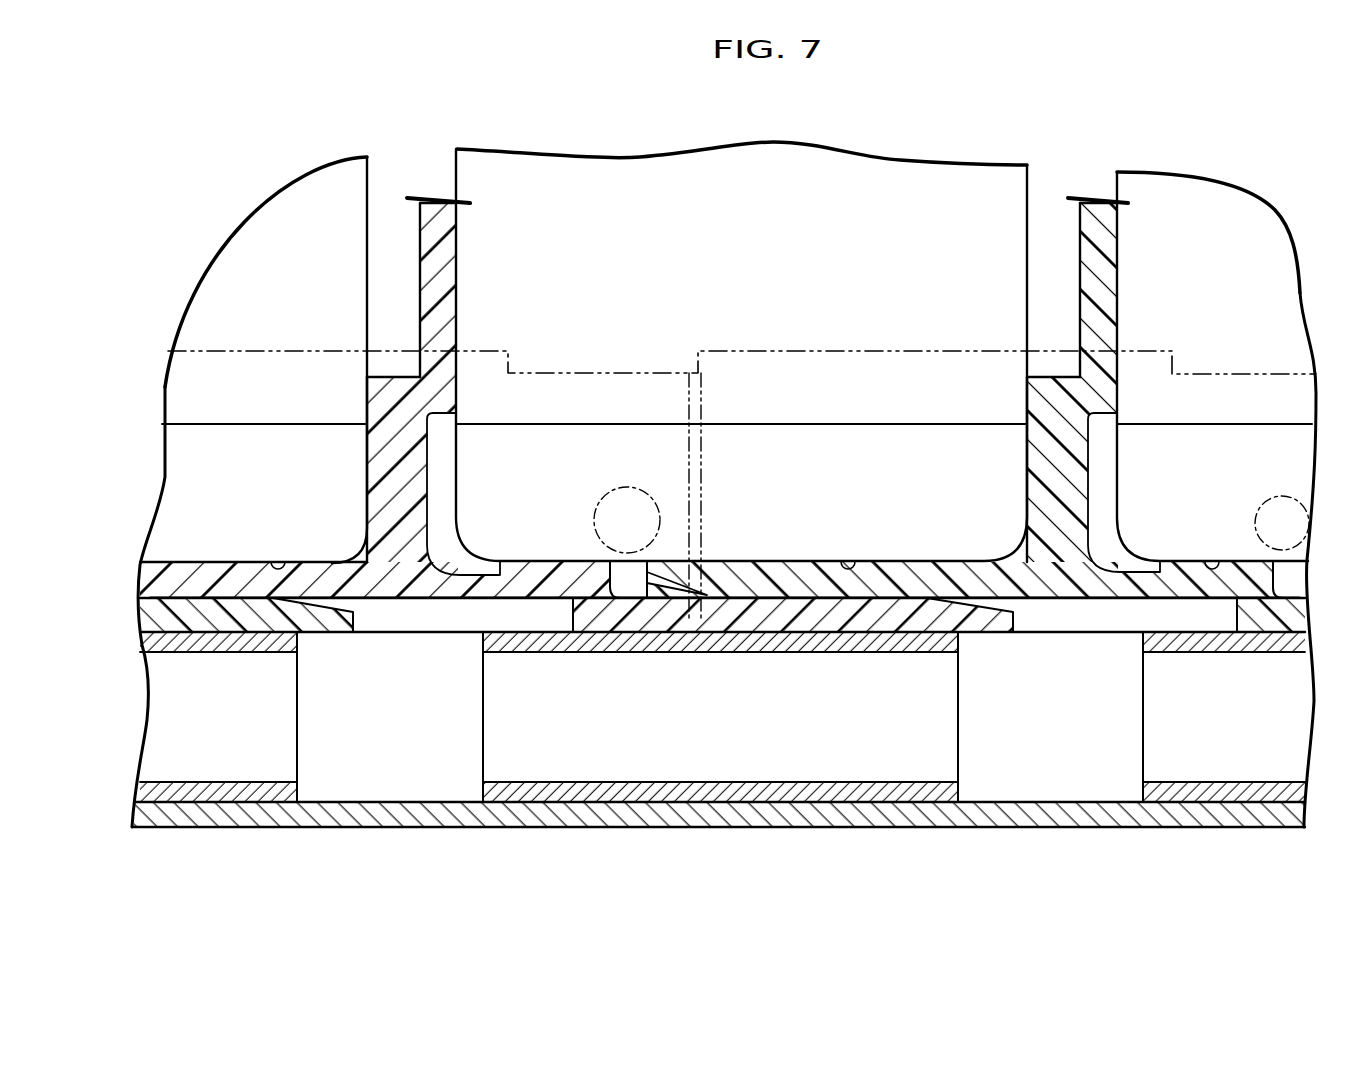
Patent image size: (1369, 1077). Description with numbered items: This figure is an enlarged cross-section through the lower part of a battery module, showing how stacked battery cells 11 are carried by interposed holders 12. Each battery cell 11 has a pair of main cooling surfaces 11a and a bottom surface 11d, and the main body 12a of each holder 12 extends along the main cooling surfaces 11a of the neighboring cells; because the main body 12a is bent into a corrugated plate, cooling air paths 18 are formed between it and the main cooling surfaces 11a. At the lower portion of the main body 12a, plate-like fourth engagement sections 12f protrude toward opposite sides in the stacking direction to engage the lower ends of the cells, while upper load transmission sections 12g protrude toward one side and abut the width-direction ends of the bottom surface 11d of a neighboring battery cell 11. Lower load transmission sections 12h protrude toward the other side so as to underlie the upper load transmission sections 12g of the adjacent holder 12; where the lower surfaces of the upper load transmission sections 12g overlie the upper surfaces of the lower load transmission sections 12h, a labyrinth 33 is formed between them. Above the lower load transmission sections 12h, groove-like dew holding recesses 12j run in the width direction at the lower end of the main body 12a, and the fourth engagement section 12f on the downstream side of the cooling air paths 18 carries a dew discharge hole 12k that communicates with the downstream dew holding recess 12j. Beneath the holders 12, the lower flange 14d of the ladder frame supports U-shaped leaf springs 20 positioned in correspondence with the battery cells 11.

The battery cell 11 is at (283, 282).
The main cooling surface 11a is at (370, 242).
The bottom surface 11d is at (295, 562).
The holder 12 is at (458, 262).
The main body 12a is at (438, 203).
The fourth engagement section 12f is at (577, 373).
The upper load transmission section 12g is at (242, 568).
The lower load transmission section 12h is at (258, 618).
The dew holding recess 12j is at (428, 465).
The dew discharge hole 12k is at (638, 490).
The lower flange 14d is at (455, 828).
The cooling air path 18 is at (397, 283).
The leaf spring 20 is at (282, 753).
The labyrinth 33 is at (215, 597).